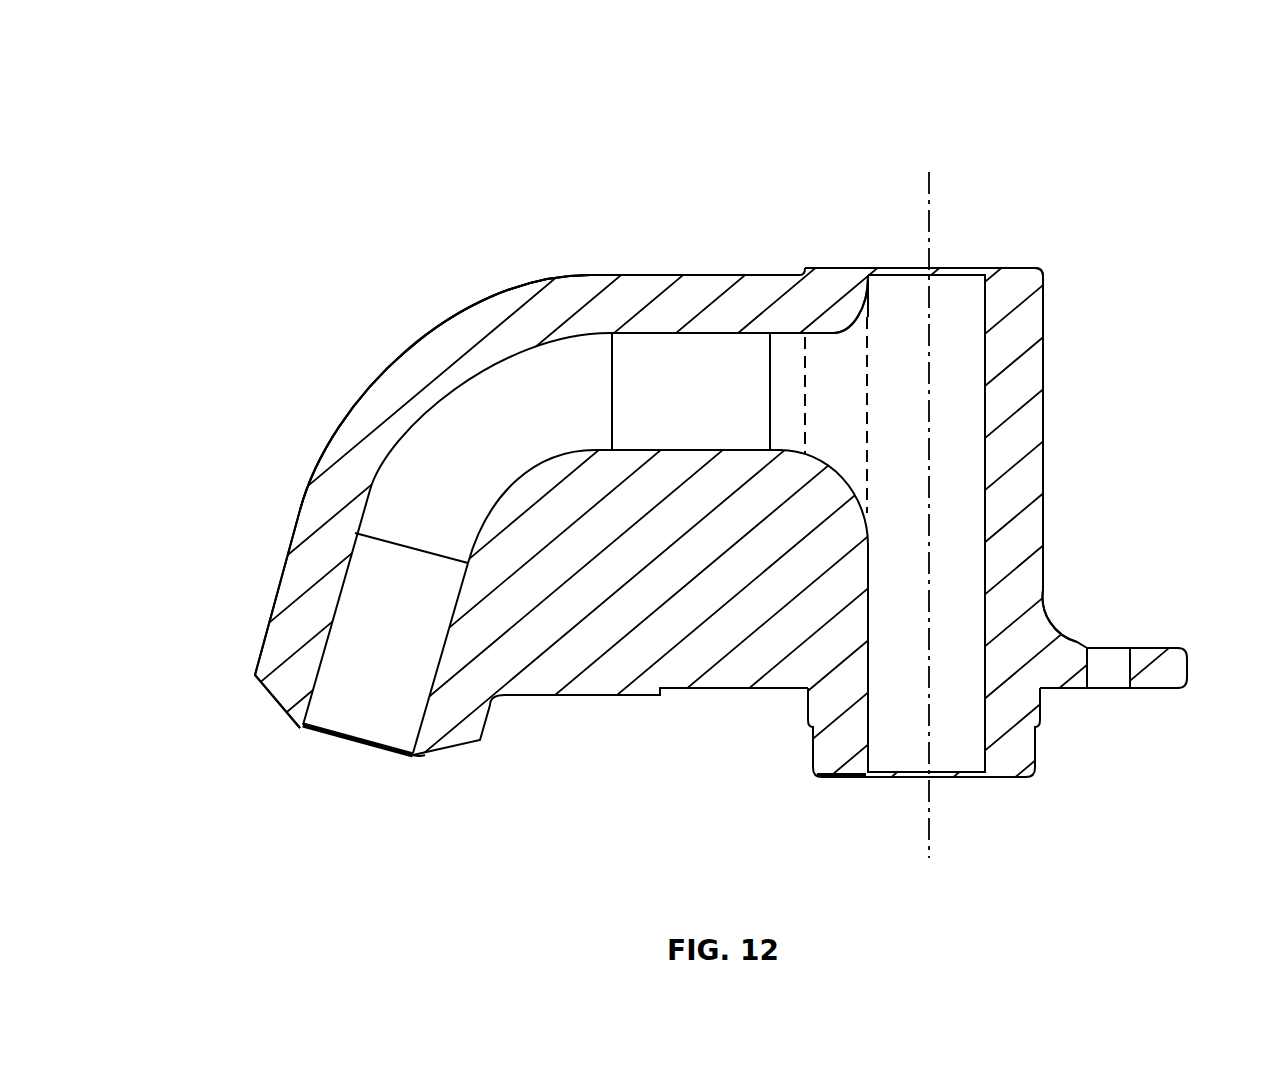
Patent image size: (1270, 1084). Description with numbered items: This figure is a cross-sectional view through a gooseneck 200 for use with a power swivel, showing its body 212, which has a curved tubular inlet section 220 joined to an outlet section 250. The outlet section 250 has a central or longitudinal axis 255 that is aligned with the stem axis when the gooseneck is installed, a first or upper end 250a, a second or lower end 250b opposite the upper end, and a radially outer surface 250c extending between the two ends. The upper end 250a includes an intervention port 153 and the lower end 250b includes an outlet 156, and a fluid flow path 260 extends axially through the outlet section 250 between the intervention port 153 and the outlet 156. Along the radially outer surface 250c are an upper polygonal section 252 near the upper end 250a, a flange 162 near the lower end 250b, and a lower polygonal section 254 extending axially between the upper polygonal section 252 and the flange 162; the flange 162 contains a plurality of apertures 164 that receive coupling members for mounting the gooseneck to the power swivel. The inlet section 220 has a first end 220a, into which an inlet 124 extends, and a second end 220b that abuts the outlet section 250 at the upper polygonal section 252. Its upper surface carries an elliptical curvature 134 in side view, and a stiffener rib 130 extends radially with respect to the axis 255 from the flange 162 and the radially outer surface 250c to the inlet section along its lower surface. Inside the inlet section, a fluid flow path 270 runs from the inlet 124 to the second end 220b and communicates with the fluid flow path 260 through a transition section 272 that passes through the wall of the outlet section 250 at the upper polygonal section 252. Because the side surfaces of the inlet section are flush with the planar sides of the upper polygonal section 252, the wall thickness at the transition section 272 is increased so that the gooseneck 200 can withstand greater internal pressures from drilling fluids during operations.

The gooseneck 200 is at (242, 82).
The body 212 is at (452, 180).
The inlet section 220 is at (383, 320).
The first end 220a is at (300, 728).
The second end 220b is at (802, 335).
The elliptical curvature 134 is at (450, 318).
The fluid flow path 270 is at (538, 378).
The transition section 272 is at (843, 447).
The inlet 124 is at (372, 748).
The stiffener rib 130 is at (622, 607).
The outlet section 250 is at (1114, 414).
The upper end 250a is at (1031, 267).
The lower end 250b is at (1011, 788).
The radially outer surface 250c is at (1047, 375).
The upper polygonal section 252 is at (1048, 331).
The lower polygonal section 254 is at (1048, 537).
The longitudinal axis 255 is at (927, 182).
The fluid flow path 260 is at (965, 505).
The intervention port 153 is at (950, 272).
The outlet 156 is at (888, 780).
The flange 162 is at (1177, 653).
The apertures 164 is at (1127, 665).